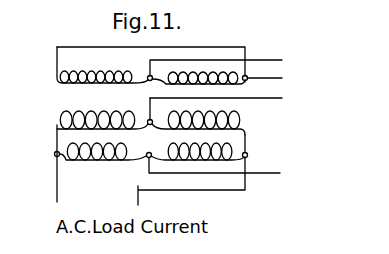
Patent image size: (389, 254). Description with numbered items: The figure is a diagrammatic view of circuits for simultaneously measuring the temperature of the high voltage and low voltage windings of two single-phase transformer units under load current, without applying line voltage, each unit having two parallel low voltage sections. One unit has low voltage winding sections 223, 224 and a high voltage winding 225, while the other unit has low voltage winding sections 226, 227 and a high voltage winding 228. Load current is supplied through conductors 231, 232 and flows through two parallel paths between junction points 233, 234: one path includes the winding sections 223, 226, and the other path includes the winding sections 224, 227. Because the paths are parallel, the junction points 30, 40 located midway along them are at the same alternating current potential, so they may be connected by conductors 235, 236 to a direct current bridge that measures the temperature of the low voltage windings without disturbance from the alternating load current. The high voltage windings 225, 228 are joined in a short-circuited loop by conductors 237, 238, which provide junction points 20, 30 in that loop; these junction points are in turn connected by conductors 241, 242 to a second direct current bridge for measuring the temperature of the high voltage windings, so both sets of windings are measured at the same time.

The junction point 20 is at (148, 74).
The junction point 30 is at (252, 68).
The junction point 40 is at (147, 159).
The low voltage winding section 223 is at (86, 157).
The low voltage winding section 224 is at (93, 109).
The high voltage winding 225 is at (104, 66).
The low voltage winding section 226 is at (246, 158).
The low voltage winding section 227 is at (220, 123).
The high voltage winding 228 is at (247, 81).
The conductor 231 is at (58, 196).
The conductor 232 is at (191, 185).
The junction point 233 is at (54, 154).
The junction point 234 is at (253, 140).
The conductor 235 is at (282, 98).
The conductor 236 is at (258, 180).
The conductor 237 is at (223, 47).
The conductor 238 is at (149, 89).
The conductor 241 is at (275, 60).
The conductor 242 is at (283, 75).